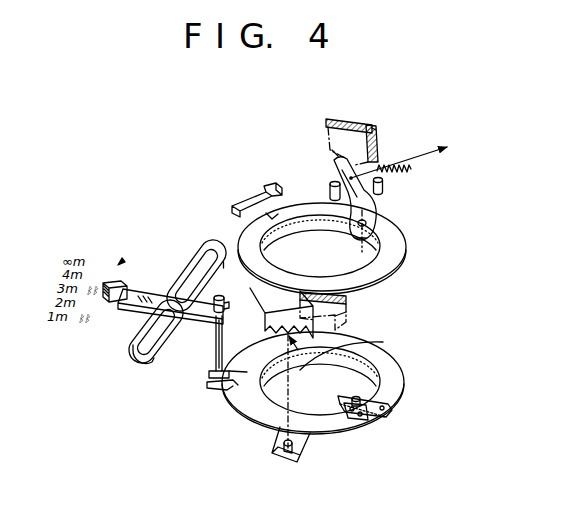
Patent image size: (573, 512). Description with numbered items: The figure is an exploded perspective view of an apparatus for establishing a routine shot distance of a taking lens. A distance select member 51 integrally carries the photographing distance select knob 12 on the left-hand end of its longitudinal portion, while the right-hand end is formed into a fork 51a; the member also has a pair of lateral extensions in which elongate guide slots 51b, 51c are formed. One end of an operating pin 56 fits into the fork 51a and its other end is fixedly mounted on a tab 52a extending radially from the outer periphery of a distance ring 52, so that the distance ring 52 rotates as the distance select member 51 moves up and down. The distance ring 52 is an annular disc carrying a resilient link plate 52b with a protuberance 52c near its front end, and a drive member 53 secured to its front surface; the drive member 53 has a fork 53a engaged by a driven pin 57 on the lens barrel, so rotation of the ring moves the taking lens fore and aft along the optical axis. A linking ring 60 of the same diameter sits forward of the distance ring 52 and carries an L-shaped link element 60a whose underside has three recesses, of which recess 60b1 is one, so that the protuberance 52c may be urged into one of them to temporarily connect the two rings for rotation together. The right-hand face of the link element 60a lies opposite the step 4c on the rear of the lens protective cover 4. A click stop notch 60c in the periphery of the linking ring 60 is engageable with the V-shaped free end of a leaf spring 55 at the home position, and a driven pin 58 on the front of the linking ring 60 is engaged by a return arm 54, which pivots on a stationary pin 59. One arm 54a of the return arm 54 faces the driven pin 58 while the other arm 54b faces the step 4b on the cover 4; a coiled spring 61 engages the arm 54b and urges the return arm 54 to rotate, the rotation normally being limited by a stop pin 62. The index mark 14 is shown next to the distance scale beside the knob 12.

The lens protective cover 4 is at (356, 124).
The step 4b is at (338, 156).
The step 4c is at (345, 322).
The photographing distance select knob 12 is at (120, 282).
The index mark 14 is at (120, 263).
The distance select member 51 is at (130, 308).
The fork 51a is at (228, 294).
The elongate guide slot 51b is at (193, 278).
The elongate guide slot 51c is at (157, 337).
The distance ring 52 is at (397, 383).
The tab 52a is at (228, 378).
The link plate 52b is at (303, 443).
The protuberance 52c is at (287, 448).
The drive member 53 is at (387, 417).
The fork 53a is at (363, 424).
The return arm 54 is at (378, 208).
The arm 54a is at (356, 225).
The arm 54b is at (374, 138).
The leaf spring 55 is at (246, 209).
The operating pin 56 is at (216, 350).
The driven pin 57 is at (350, 400).
The driven pin 58 is at (330, 186).
The stationary pin 59 is at (358, 238).
The linking ring 60 is at (398, 254).
The link element 60a is at (266, 314).
The recess 60b1 is at (393, 351).
The click stop notch 60c is at (271, 214).
The coiled spring 61 is at (410, 165).
The stop pin 62 is at (384, 187).